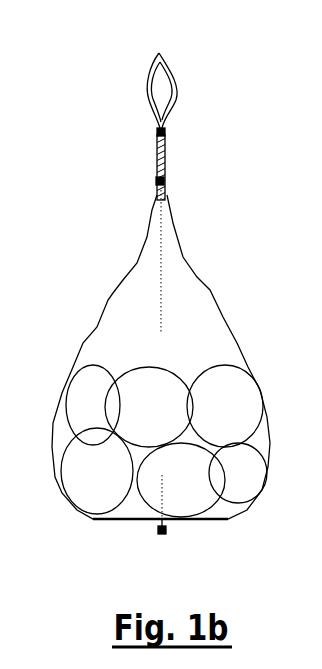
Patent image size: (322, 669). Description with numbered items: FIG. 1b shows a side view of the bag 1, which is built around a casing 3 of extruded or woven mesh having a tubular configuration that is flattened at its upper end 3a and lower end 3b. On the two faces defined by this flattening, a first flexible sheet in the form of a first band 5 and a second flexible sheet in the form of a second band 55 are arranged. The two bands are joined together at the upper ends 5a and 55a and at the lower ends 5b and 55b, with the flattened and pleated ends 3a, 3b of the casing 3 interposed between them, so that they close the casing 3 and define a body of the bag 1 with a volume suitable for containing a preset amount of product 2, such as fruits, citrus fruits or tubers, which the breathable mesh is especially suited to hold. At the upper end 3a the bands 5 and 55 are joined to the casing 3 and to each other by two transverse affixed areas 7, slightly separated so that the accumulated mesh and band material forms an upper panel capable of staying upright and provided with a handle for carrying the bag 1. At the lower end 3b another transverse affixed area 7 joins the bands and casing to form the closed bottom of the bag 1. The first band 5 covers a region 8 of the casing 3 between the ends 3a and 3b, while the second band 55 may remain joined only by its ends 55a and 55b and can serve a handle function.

The bag 1 is at (122, 92).
The product 2 is at (245, 485).
The casing 3 is at (268, 435).
The upper end of the casing 3a is at (157, 143).
The lower end of the casing 3b is at (157, 530).
The first band 5 is at (219, 222).
The upper end of the first band 5a is at (257, 160).
The lower end of the first band 5b is at (165, 530).
The affixed area 7 is at (163, 132).
The region of the casing 8 is at (148, 198).
The second band 55 is at (110, 297).
The upper end of the second band 55a is at (157, 152).
The lower end of the second band 55b is at (152, 522).